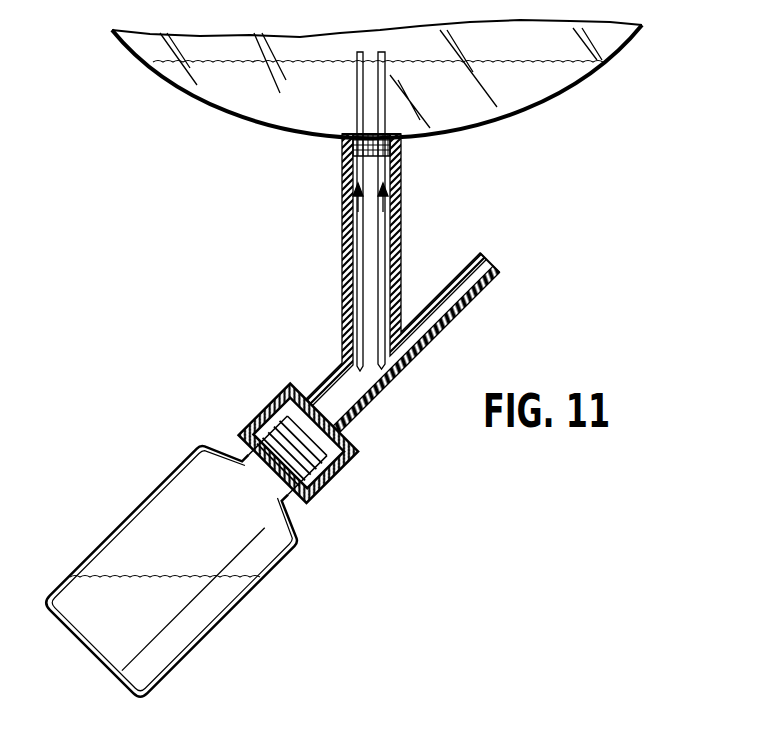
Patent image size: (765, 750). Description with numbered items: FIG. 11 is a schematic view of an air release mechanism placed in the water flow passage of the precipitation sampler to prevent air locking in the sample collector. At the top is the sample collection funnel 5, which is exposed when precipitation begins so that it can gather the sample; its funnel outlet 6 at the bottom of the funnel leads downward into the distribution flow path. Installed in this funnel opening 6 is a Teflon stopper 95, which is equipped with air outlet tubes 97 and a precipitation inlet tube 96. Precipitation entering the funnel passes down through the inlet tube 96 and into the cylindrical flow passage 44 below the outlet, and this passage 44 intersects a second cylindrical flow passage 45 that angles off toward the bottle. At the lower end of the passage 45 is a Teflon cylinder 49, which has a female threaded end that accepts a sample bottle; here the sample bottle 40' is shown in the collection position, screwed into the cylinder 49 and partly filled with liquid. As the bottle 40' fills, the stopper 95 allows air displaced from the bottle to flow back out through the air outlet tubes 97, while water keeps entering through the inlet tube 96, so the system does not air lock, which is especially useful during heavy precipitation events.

The sample collection funnel 5 is at (632, 27).
The funnel outlet 6 is at (391, 134).
The Teflon stopper 95 is at (347, 150).
The cylindrical flow passage 44 is at (392, 232).
The cylindrical flow passage 45 is at (327, 378).
The air outlet tubes 97 is at (358, 103).
The precipitation inlet tube 96 is at (383, 258).
The sample bottle 40' is at (199, 543).
The Teflon cylinder 49 is at (256, 420).